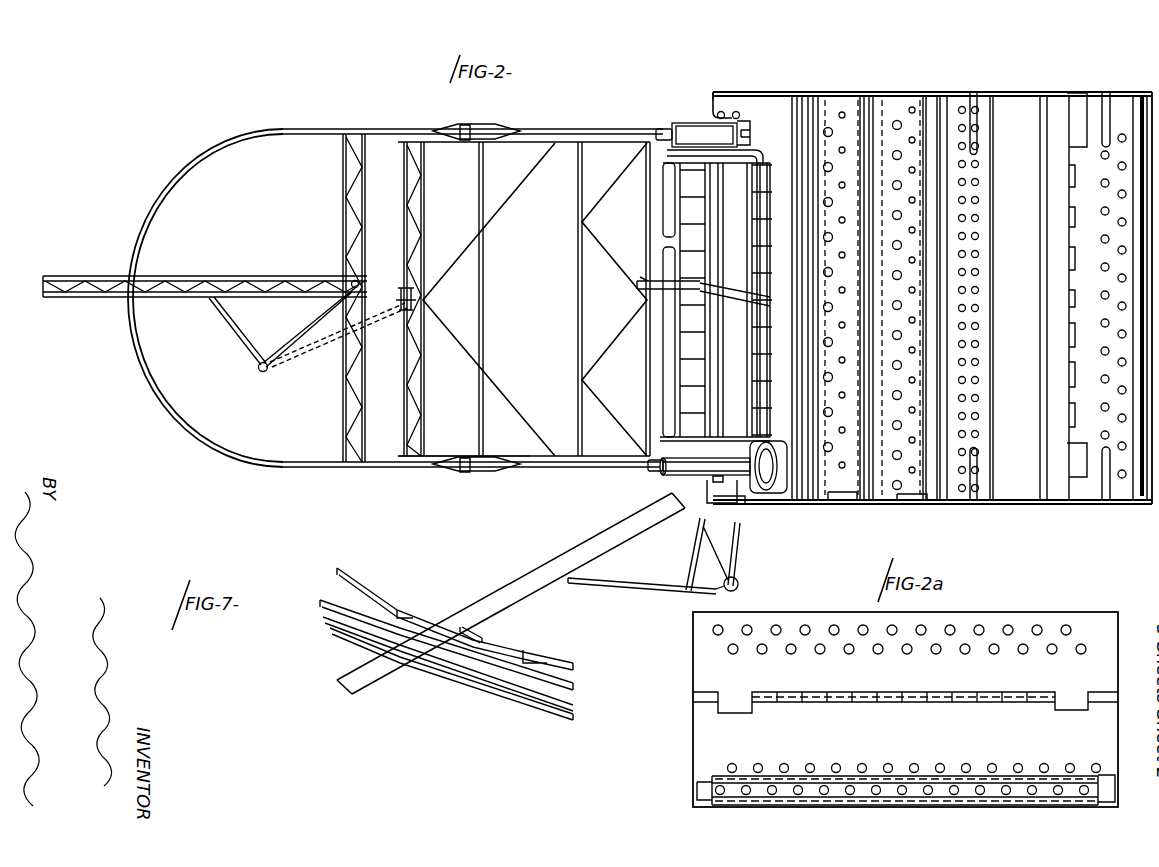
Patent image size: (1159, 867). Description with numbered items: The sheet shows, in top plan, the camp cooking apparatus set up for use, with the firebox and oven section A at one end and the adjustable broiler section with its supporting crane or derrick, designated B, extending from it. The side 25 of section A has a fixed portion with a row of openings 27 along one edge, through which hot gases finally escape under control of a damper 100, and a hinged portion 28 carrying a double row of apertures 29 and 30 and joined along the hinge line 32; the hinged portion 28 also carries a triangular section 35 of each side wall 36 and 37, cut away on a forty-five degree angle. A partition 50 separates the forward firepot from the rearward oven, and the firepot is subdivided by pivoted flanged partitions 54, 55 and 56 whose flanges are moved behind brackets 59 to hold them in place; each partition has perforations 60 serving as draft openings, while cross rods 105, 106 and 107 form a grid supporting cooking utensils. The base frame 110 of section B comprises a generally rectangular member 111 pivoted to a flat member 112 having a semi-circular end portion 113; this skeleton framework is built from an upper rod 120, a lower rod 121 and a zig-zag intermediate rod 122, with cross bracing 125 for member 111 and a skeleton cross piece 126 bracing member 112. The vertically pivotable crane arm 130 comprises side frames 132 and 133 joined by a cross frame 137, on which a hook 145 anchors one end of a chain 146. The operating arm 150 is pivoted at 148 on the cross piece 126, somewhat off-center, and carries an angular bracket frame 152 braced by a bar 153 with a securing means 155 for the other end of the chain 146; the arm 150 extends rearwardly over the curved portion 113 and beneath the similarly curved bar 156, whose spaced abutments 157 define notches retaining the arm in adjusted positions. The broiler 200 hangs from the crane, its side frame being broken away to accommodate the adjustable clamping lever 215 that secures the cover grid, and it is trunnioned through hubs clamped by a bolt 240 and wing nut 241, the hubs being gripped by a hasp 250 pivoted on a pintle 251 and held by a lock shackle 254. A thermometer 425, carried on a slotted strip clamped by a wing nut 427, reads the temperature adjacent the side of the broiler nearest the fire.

In FIG. 2, the firebox and oven section A is at (820, 90).
In FIG. 2, the broiler section with supporting crane B is at (433, 125).
In FIG. 2A, the side 25 is at (703, 733).
In FIG. 2A, the openings 27 is at (910, 767).
In FIG. 2, the hinged portion 28 is at (1080, 213).
In FIG. 2A, the hinged portion 28 is at (700, 663).
In FIG. 2, the apertures 29 is at (1118, 255).
In FIG. 2, the apertures 30 is at (1100, 353).
In FIG. 2, the hinge line 32 is at (1073, 257).
In FIG. 2A, the hinge line 32 is at (907, 697).
In FIG. 2, the triangular section 35 is at (1078, 95).
In FIG. 2, the side wall 36 is at (925, 504).
In FIG. 2, the side wall 37 is at (883, 93).
In FIG. 2, the partition 50 is at (1030, 220).
In FIG. 2, the pivoted flanged partition 54 is at (803, 95).
In FIG. 2, the pivoted flanged partition 55 is at (893, 150).
In FIG. 2, the pivoted flanged partition 56 is at (937, 103).
In FIG. 2, the brackets 59 is at (760, 93).
In FIG. 2, the perforations 60 is at (912, 230).
In FIG. 2, the damper 100 is at (1143, 92).
In FIG. 2A, the damper 100 is at (737, 788).
In FIG. 2, the cross rod 105 is at (962, 98).
In FIG. 2, the cross rod 106 is at (1040, 117).
In FIG. 2, the cross rod 107 is at (1105, 112).
In FIG. 2, the base frame 110 is at (304, 474).
In FIG. 2, the rectangular member 111 is at (565, 470).
In FIG. 2, the flat member 112 is at (368, 468).
In FIG. 2, the semi-circular end portion 113 is at (132, 366).
In FIG. 7, the semi-circular end portion 113 is at (345, 638).
In FIG. 7, the upper rod 120 is at (503, 673).
In FIG. 7, the lower rod 121 is at (423, 677).
In FIG. 7, the zig-zag intermediate rod 122 is at (487, 682).
In FIG. 2, the cross bracing 125 is at (580, 197).
In FIG. 2, the skeleton cross piece 126 is at (343, 190).
In FIG. 2, the crane arm 130 is at (565, 453).
In FIG. 2, the side frame 132 is at (562, 142).
In FIG. 2, the side frame 133 is at (527, 462).
In FIG. 2, the cross frame 137 is at (407, 195).
In FIG. 2, the hook 145 is at (403, 312).
In FIG. 2, the chain 146 is at (292, 372).
In FIG. 7, the chain 146 is at (743, 556).
In FIG. 2, the pivot 148 is at (356, 280).
In FIG. 2, the operating arm 150 is at (174, 277).
In FIG. 7, the operating arm 150 is at (508, 582).
In FIG. 2, the angular bracket frame 152 is at (249, 340).
In FIG. 7, the angular bracket frame 152 is at (698, 548).
In FIG. 2, the bar 153 is at (229, 318).
In FIG. 7, the bar 153 is at (623, 580).
In FIG. 2, the securing means 155 is at (258, 370).
In FIG. 7, the securing means 155 is at (742, 580).
In FIG. 2, the curved bar 156 is at (174, 420).
In FIG. 7, the curved bar 156 is at (372, 587).
In FIG. 7, the abutments 157 is at (467, 632).
In FIG. 2, the broiler 200 is at (693, 218).
In FIG. 2, the clamping lever 215 is at (637, 282).
In FIG. 2, the bolt 240 is at (723, 113).
In FIG. 2, the wing nut 241 is at (703, 477).
In FIG. 2, the hasp 250 is at (700, 128).
In FIG. 2, the pintle 251 is at (745, 137).
In FIG. 2, the lock shackle 254 is at (663, 137).
In FIG. 2, the thermometer 425 is at (783, 457).
In FIG. 2, the wing nut 427 is at (732, 478).